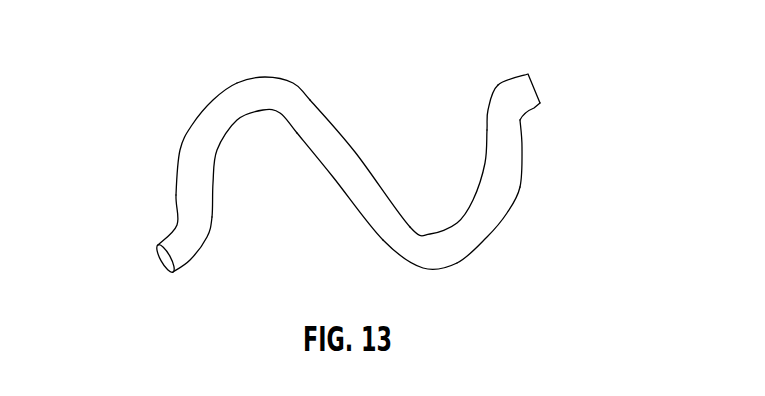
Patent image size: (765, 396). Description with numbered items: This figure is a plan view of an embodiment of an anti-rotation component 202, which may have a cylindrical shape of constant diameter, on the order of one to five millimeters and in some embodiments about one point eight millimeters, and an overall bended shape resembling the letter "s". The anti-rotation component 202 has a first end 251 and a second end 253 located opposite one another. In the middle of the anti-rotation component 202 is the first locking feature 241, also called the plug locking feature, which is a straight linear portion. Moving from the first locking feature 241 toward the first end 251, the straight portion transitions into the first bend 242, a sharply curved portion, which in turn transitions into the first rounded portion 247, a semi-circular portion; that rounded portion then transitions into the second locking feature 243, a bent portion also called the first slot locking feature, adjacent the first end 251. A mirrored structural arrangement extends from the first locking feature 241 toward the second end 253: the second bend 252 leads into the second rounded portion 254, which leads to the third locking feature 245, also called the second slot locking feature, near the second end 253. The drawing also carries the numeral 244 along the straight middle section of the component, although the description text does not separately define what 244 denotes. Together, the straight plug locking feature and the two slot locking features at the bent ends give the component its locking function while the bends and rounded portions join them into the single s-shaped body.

The anti-rotation component 202 is at (174, 60).
The first locking feature 241 is at (355, 152).
The first bend 242 is at (273, 77).
The second locking feature 243 is at (177, 225).
The outer wall of middle section 244 is at (325, 113).
The third locking feature 245 is at (527, 118).
The first rounded portion 247 is at (190, 135).
The first end 251 is at (156, 258).
The second bend 252 is at (428, 270).
The second end 253 is at (538, 93).
The second rounded portion 254 is at (505, 217).